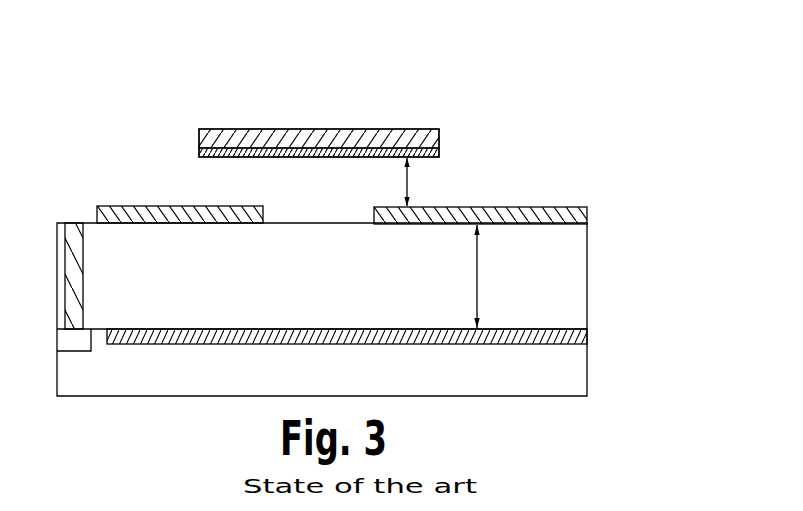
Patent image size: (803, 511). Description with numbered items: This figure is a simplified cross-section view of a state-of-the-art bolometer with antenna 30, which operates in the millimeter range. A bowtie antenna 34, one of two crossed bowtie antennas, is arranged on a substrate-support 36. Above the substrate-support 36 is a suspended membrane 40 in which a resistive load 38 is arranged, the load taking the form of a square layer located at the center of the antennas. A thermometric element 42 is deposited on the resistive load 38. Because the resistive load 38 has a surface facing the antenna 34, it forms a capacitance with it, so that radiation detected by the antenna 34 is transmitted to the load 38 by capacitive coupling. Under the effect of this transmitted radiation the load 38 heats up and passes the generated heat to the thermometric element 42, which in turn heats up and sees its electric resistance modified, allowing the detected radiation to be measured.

The bolometer with antenna 30 is at (329, 70).
The bowtie antenna 34 is at (115, 212).
The substrate-support 36 is at (563, 278).
The resistive load 38 is at (392, 147).
The suspended membrane 40 is at (298, 127).
The thermometric element 42 is at (235, 137).